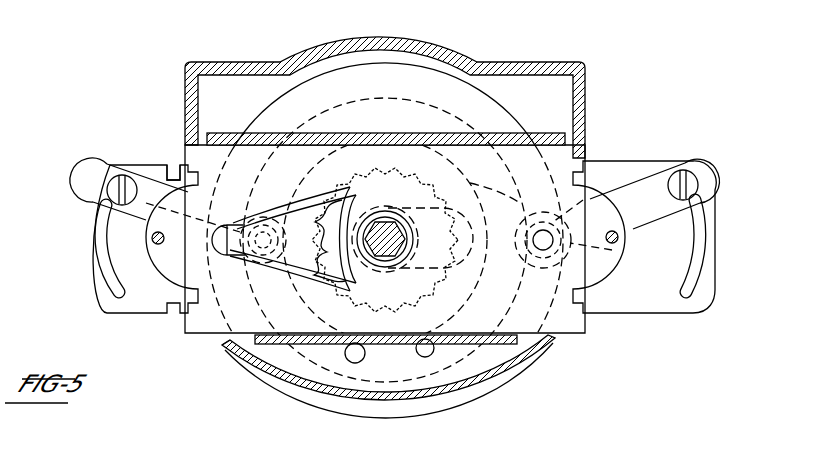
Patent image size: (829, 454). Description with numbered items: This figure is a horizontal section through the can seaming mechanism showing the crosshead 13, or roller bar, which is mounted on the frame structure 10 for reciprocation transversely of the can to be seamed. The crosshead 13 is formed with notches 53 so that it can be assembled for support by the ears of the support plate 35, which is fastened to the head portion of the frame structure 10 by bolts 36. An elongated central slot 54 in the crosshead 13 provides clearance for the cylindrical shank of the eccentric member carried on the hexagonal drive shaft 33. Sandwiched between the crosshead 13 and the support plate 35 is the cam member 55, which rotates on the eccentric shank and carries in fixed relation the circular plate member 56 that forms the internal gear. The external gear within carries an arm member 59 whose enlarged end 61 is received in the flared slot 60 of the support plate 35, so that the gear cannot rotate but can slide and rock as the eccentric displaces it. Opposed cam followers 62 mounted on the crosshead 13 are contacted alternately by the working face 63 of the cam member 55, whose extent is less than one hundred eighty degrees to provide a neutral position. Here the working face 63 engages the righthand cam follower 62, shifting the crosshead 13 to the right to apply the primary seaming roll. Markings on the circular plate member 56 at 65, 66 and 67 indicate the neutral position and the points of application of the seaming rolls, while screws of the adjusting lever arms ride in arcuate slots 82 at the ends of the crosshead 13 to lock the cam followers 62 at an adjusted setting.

The frame structure 10 is at (246, 357).
The crosshead 13 is at (148, 313).
The drive shaft 33 is at (386, 225).
The support plate 35 is at (166, 272).
The bolts 36 is at (164, 240).
The notches 53 is at (172, 166).
The elongated central slot 54 is at (472, 233).
The cam member 55 is at (478, 186).
The circular plate member 56 is at (334, 404).
The arm member 59 is at (308, 270).
The flared slot 60 is at (300, 210).
The enlarged end of arm member 61 is at (230, 257).
The cam followers 62 is at (262, 233).
The working face 63 is at (523, 272).
The neutral position marking 65 is at (343, 66).
The first seaming roll marking 66 is at (406, 413).
The second seaming roll marking 67 is at (440, 68).
The arcuate slots 82 is at (105, 252).